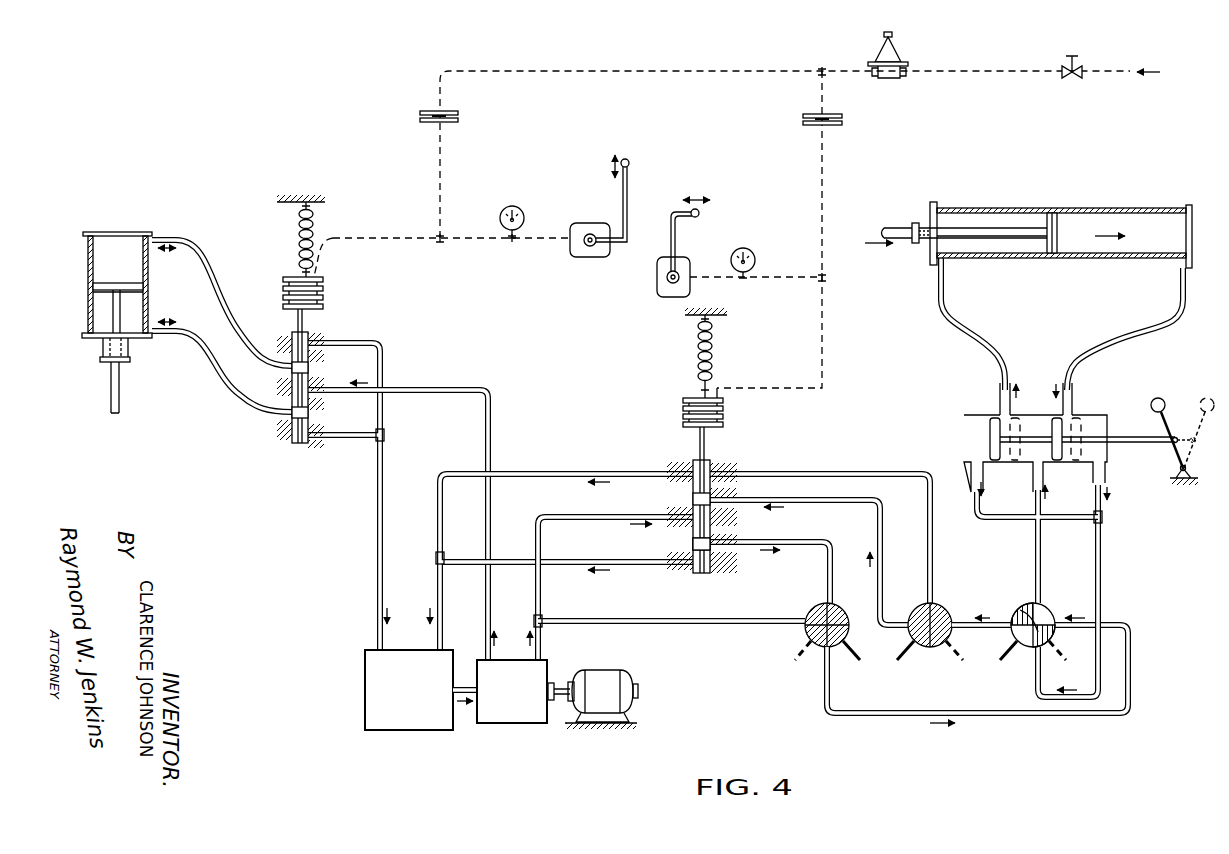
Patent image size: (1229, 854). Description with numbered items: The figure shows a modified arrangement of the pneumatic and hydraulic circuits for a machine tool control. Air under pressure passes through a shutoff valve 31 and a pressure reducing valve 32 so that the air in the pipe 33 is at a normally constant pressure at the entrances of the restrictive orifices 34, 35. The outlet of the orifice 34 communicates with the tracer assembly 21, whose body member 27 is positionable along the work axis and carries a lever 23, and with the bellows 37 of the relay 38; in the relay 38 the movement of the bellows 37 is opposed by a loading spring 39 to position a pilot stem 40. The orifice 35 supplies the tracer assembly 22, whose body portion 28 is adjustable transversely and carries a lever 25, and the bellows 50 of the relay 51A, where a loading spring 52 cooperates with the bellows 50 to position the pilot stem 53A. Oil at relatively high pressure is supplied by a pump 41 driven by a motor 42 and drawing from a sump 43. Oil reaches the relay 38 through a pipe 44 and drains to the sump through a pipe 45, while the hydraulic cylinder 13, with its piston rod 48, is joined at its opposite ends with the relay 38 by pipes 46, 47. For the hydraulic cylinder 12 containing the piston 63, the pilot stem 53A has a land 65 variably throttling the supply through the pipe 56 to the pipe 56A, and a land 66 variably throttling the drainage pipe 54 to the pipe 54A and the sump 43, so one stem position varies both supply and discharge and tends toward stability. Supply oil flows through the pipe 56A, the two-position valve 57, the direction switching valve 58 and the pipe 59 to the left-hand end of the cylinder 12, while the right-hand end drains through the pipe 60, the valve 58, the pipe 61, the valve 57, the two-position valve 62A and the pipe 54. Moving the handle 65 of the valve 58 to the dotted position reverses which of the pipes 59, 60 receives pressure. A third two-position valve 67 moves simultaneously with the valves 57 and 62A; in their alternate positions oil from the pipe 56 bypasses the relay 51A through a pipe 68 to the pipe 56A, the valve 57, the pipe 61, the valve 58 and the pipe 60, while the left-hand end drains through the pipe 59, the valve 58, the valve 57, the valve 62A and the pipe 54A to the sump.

The hydraulic cylinder 12 is at (1075, 208).
The hydraulic cylinder 13 is at (88, 262).
The tracer assembly 21 is at (594, 281).
The tracer assembly 22 is at (675, 318).
The valve lever 23 is at (630, 183).
The valve lever 25 is at (690, 218).
The body member 27 is at (590, 222).
The body portion 28 is at (658, 280).
The shutoff valve 31 is at (1073, 79).
The pressure reducing valve 32 is at (891, 79).
The pipe 33 is at (622, 70).
The restrictive orifice 34 is at (426, 110).
The restrictive orifice 35 is at (838, 126).
The bellows 37 is at (323, 298).
The relay 38 is at (279, 341).
The loading spring 39 is at (298, 235).
The pilot stem 40 is at (305, 321).
The pump 41 is at (517, 724).
The motor 42 is at (595, 669).
The sump 43 is at (405, 731).
The pipe 44 is at (491, 416).
The pipe 45 is at (378, 511).
The pipe 46 is at (191, 351).
The pipe 47 is at (199, 243).
The piston rod 48 is at (110, 394).
The bellows 50 is at (683, 408).
The relay 51A is at (765, 418).
The loading spring 52 is at (697, 348).
The pilot stem 53A is at (708, 446).
The pipe 54 is at (810, 502).
The pipe 54A is at (527, 470).
The pipe 56 is at (556, 519).
The pipe 56A is at (1030, 718).
The two-position valve 57 is at (1026, 605).
The direction switching valve 58 is at (1113, 401).
The pipe 59 is at (965, 323).
The pipe 60 is at (1165, 322).
The pipe 61 is at (1102, 572).
The two-position valve 62A is at (940, 603).
The piston 63 is at (1058, 235).
The land 65 is at (1165, 400).
The land 66 is at (693, 496).
The third two-position valve 67 is at (818, 605).
The pipe 68 is at (688, 626).